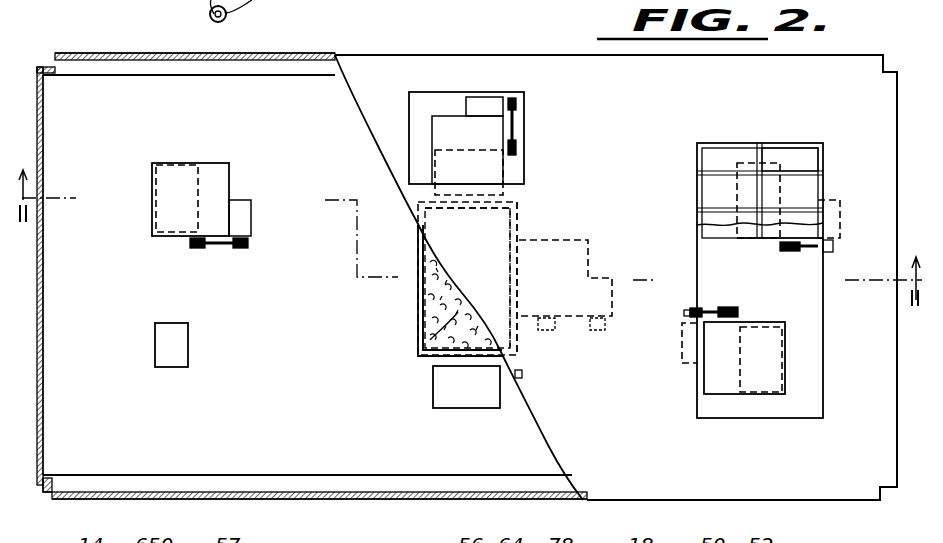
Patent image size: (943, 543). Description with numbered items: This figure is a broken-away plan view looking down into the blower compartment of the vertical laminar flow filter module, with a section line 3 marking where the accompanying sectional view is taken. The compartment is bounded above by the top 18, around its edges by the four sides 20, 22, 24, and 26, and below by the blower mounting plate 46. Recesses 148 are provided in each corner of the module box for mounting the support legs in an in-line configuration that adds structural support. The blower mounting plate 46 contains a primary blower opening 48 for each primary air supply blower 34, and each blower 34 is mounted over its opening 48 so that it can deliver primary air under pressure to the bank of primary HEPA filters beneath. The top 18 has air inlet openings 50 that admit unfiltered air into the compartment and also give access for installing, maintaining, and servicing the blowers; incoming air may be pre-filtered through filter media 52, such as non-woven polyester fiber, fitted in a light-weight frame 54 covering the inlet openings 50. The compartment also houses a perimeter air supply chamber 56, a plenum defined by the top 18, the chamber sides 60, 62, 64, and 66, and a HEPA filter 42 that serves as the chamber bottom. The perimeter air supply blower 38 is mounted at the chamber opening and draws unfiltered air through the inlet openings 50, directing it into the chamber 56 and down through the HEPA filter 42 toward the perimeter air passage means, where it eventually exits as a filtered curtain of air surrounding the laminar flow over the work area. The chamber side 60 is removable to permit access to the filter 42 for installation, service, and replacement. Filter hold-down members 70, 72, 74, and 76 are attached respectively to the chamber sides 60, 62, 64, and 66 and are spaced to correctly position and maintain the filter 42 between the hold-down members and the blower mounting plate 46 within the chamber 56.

The section line 3- 3 is at (466, 225).
The top 18 is at (648, 117).
The side 20 is at (38, 283).
The side 22 is at (326, 500).
The side 24 is at (902, 383).
The side 26 is at (120, 52).
The primary air supply blower 34 is at (225, 170).
The perimeter air supply blower 38 is at (576, 260).
The HEPA filter 42 is at (418, 357).
The blower mounting plate 46 is at (70, 387).
The primary blower opening 48 is at (158, 215).
The air inlet opening 50 is at (410, 104).
The filter media 52 is at (720, 155).
The light-weight frame 54 is at (790, 142).
The perimeter air supply chamber 56 is at (430, 310).
The chamber side 60 is at (418, 266).
The chamber side 62 is at (430, 370).
The chamber side 64 is at (520, 224).
The chamber side 66 is at (467, 224).
The filter hold-down member 70 is at (427, 338).
The filter hold-down member 72 is at (455, 326).
The filter hold-down member 74 is at (517, 292).
The filter hold-down member 76 is at (477, 203).
The recess 148 is at (44, 42).